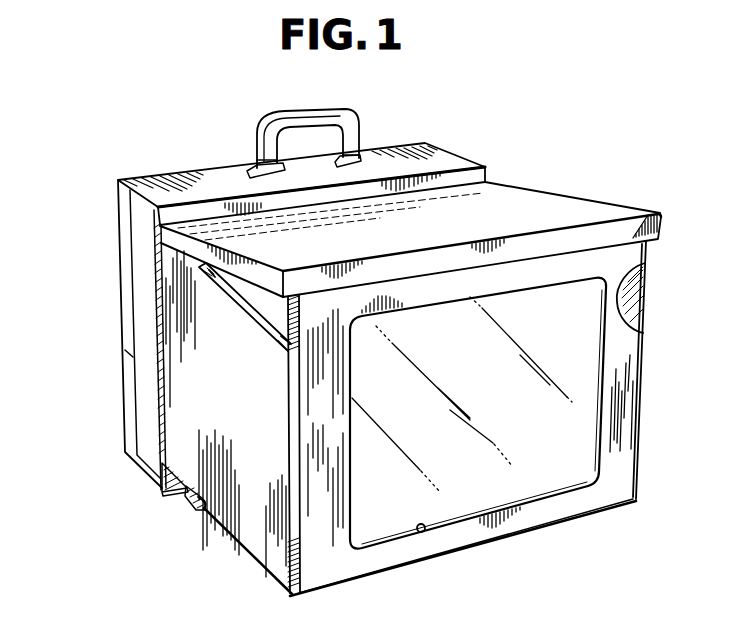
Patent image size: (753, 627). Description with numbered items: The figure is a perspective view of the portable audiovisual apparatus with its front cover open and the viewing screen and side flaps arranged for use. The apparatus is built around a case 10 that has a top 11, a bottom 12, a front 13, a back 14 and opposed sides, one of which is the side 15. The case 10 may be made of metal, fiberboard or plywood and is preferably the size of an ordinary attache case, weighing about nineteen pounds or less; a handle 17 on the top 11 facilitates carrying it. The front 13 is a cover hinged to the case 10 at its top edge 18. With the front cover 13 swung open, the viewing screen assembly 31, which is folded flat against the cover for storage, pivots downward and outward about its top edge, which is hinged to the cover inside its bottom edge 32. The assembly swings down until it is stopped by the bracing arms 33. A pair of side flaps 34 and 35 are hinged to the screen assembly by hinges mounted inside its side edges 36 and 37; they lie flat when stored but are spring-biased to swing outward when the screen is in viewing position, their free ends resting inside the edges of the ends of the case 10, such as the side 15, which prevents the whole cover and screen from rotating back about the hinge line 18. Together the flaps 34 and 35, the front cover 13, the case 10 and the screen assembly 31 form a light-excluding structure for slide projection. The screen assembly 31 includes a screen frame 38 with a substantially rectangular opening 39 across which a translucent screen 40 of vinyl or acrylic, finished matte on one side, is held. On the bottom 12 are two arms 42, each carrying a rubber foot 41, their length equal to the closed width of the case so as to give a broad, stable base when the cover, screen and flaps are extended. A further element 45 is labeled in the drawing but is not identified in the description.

The case 10 is at (96, 268).
The top 11 is at (438, 157).
The bottom 12 is at (158, 489).
The front cover 13 is at (565, 200).
The back 14 is at (125, 393).
The side 15 is at (143, 310).
The handle 17 is at (325, 112).
The top edge 18 is at (478, 200).
The viewing screen assembly 31 is at (527, 541).
The bottom edge 32 is at (662, 225).
The bracing arms 33 is at (267, 335).
The side flap 34 is at (250, 528).
The side flap 35 is at (647, 282).
The side edge 36 is at (288, 458).
The side edge 37 is at (648, 250).
The screen frame 38 is at (352, 568).
The rectangular opening 39 is at (422, 532).
The translucent screen 40 is at (458, 442).
The rubber foot 41 is at (198, 509).
The arms 42 is at (186, 499).
The back edge 45 is at (122, 230).